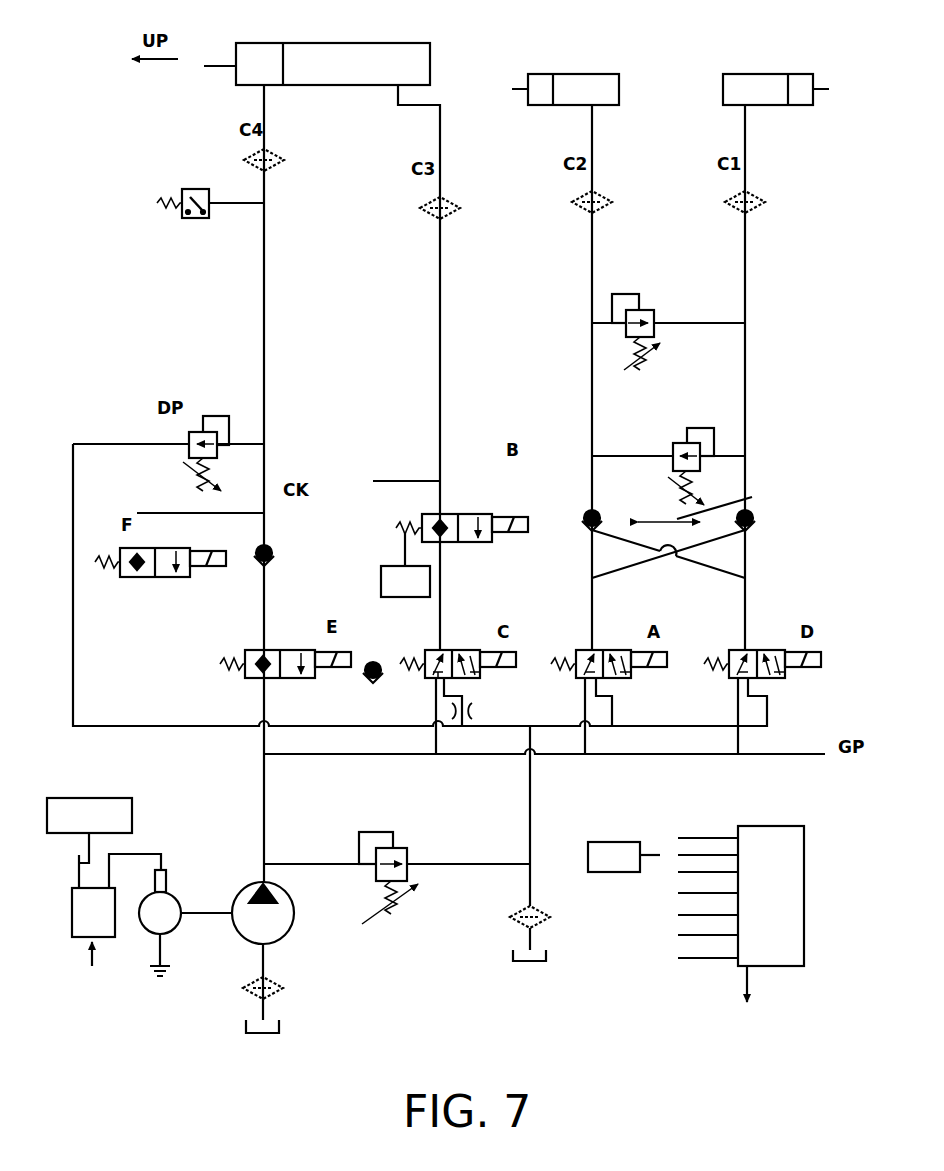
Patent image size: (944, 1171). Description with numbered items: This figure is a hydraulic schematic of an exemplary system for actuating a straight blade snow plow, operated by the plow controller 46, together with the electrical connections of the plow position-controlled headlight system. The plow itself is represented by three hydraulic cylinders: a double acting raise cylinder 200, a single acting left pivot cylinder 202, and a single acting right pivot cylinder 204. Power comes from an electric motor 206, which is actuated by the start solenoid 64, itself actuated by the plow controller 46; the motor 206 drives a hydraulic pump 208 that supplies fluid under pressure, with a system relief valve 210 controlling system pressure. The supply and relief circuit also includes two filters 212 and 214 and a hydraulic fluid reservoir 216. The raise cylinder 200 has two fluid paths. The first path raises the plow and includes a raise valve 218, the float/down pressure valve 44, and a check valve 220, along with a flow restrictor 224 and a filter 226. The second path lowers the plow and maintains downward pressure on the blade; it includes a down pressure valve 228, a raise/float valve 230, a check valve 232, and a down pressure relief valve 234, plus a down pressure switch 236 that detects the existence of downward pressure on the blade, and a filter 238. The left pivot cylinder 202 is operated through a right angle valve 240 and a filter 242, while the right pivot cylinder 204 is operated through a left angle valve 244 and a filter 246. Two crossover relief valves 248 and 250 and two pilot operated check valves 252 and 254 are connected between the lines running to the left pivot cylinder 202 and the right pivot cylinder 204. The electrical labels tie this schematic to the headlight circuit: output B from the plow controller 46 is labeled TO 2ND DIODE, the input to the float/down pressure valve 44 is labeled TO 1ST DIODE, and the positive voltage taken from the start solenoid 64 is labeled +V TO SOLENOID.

The double acting raise cylinder 200 is at (372, 43).
The single acting left pivot cylinder 202 is at (578, 74).
The single acting right pivot cylinder 204 is at (762, 74).
The electric motor 206 is at (180, 899).
The hydraulic pump 208 is at (290, 932).
The system relief valve 210 is at (396, 840).
The filter 212 is at (243, 985).
The filter 214 is at (542, 910).
The hydraulic fluid reservoir 216 is at (270, 1035).
The raise valve 218 is at (430, 650).
The check valve 220 is at (378, 662).
The flow restrictor 224 is at (474, 714).
The filter 226 is at (455, 202).
The down pressure valve 228 is at (285, 650).
The raise/float valve 230 is at (167, 579).
The check valve 232 is at (272, 546).
The down pressure relief valve 234 is at (216, 416).
The down pressure switch 236 is at (198, 188).
The filter 238 is at (278, 153).
The right angle valve 240 is at (610, 650).
The filter 242 is at (606, 196).
The left angle valve 244 is at (760, 650).
The filter 246 is at (760, 196).
The crossover relief valve 248 is at (636, 298).
The crossover relief valve 250 is at (702, 426).
The pilot operated check valve 252 is at (586, 512).
The pilot operated check valve 254 is at (756, 514).
The float/down pressure valve 44 is at (470, 512).
The start solenoid 64 is at (113, 924).
The plow controller 46 is at (762, 968).